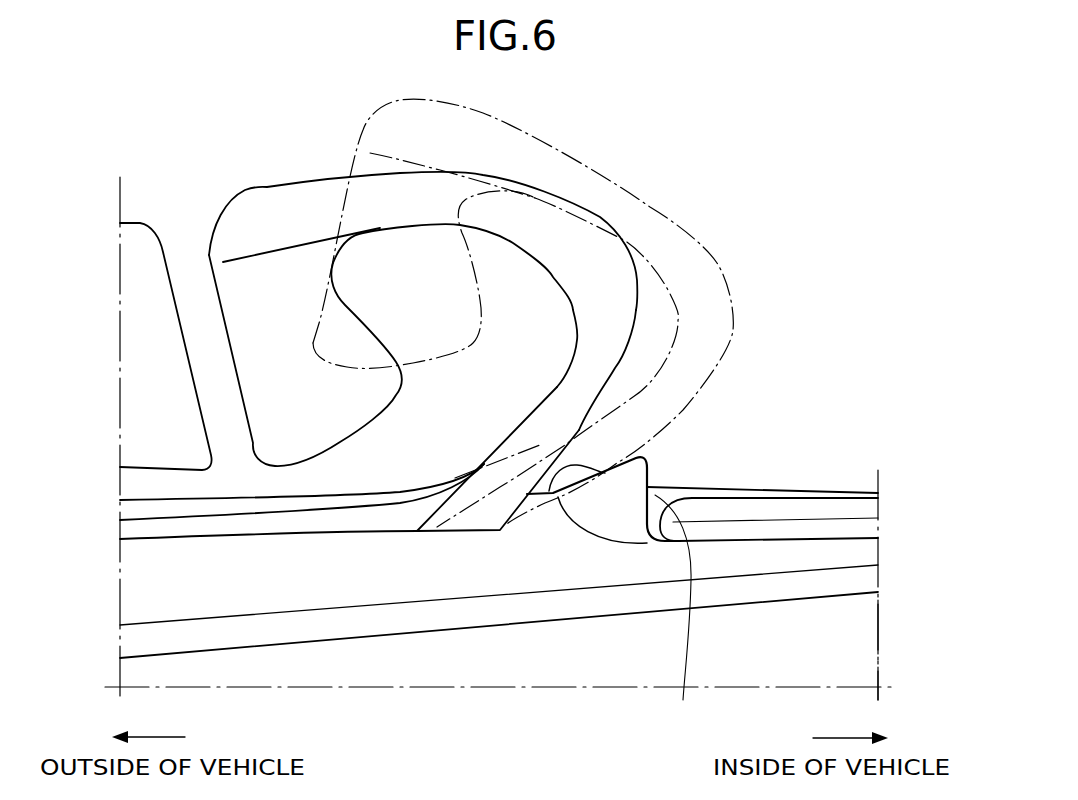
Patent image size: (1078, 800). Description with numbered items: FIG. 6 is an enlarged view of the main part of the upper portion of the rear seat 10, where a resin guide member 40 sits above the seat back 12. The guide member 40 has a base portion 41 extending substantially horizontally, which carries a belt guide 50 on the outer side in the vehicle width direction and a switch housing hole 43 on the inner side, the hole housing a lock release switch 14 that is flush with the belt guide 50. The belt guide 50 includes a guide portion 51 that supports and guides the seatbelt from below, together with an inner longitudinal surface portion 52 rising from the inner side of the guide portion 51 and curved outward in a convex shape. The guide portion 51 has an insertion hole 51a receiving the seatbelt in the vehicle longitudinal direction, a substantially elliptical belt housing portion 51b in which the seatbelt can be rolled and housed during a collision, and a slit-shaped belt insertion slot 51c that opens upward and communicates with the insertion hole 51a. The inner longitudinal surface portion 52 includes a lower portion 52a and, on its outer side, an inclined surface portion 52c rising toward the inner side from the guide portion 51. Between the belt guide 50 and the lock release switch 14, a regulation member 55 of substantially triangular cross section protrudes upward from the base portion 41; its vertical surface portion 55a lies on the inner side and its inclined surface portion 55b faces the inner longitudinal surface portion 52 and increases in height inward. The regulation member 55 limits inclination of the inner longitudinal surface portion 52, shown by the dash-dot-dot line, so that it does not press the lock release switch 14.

The vehicle door 10 is at (892, 573).
The seat back 12 is at (860, 638).
The lock release switch 14 is at (783, 490).
The guide member 40 is at (427, 637).
The base portion 41 is at (483, 612).
The switch housing hole 43 is at (860, 537).
The belt guide 50 is at (262, 180).
The guide portion 51 is at (252, 367).
The insertion hole 51a is at (128, 483).
The belt housing portion 51b is at (523, 277).
The belt insertion slot 51c is at (192, 328).
The inner longitudinal surface portion 52 is at (513, 435).
The lower portion 52a is at (607, 363).
The inclined surface portion 52c is at (603, 436).
The regulation member 55 is at (615, 517).
The vertical surface portion 55a is at (688, 614).
The inclined surface portion 55b is at (556, 470).